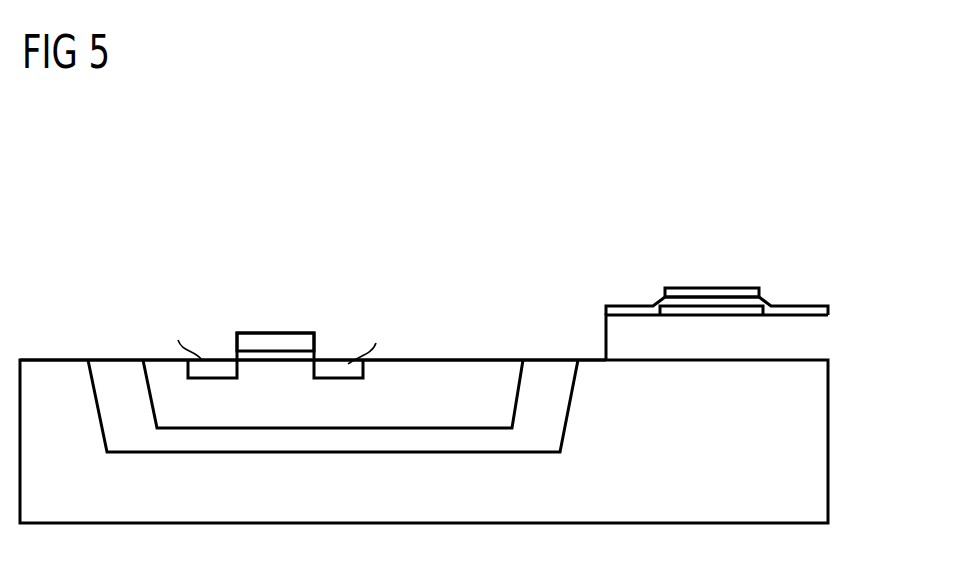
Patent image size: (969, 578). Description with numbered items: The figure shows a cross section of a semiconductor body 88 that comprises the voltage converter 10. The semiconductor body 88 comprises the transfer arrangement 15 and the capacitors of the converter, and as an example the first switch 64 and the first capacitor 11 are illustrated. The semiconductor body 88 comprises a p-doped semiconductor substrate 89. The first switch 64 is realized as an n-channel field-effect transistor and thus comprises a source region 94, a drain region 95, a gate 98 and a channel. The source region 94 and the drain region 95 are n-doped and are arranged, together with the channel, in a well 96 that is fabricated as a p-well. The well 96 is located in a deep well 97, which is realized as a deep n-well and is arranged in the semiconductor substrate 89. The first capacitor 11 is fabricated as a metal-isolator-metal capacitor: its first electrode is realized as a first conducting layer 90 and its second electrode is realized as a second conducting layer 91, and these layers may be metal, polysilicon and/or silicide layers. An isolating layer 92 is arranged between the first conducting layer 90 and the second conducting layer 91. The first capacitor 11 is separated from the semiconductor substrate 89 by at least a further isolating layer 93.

The semiconductor body 88 is at (838, 258).
The semiconductor substrate 89 is at (53, 368).
The voltage converter 10 is at (325, 290).
The transfer arrangement 15 is at (218, 243).
The first switch 64 is at (247, 283).
The gate 98 is at (275, 342).
The source region 94 is at (222, 367).
The drain region 95 is at (328, 365).
The well 96 is at (450, 368).
The deep well 97 is at (550, 368).
The first capacitor 11 is at (719, 267).
The first conducting layer 90 is at (752, 312).
The second conducting layer 91 is at (675, 255).
The isolating layer 92 is at (630, 313).
The further isolating layer 93 is at (808, 327).